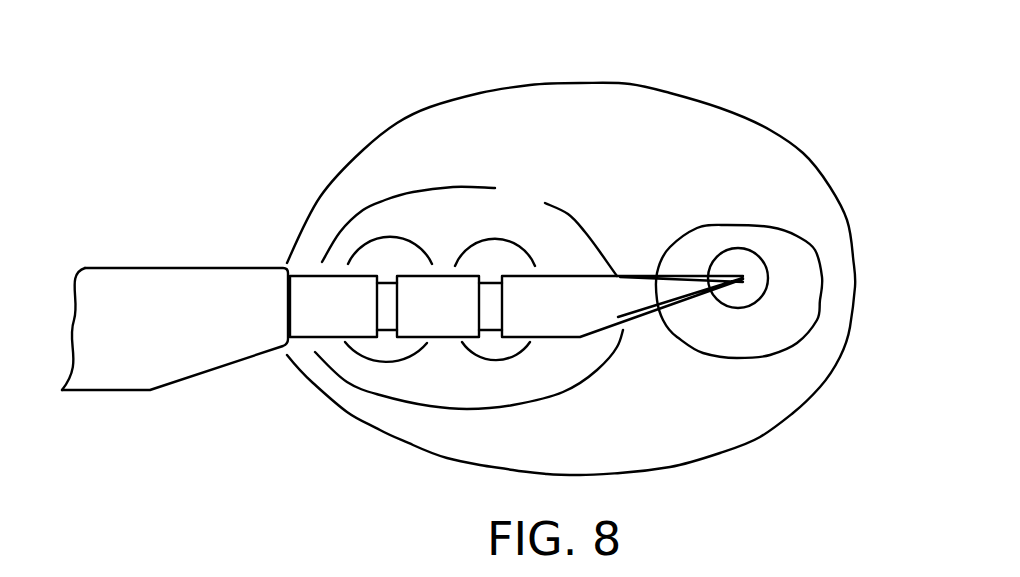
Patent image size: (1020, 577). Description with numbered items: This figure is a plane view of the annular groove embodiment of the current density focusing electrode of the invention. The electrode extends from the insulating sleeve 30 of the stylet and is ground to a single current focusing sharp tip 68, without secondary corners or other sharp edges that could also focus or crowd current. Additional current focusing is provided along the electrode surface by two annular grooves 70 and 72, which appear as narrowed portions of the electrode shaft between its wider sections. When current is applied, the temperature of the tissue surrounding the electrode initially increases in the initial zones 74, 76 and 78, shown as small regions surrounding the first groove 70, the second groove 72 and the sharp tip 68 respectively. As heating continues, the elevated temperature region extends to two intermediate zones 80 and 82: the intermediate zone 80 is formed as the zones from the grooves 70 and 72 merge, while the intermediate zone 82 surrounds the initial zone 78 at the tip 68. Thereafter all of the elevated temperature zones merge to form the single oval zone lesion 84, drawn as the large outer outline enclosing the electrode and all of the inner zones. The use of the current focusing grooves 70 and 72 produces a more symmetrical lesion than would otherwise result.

The insulating sleeve 30 is at (147, 266).
The sharp tip 68 is at (746, 275).
The annular groove 70 is at (388, 276).
The annular groove 72 is at (490, 287).
The initial zone 74 is at (358, 249).
The initial zone 76 is at (497, 250).
The initial zone 78 is at (760, 263).
The intermediate zone 80 is at (453, 187).
The intermediate zone 82 is at (797, 302).
The single oval zone lesion 84 is at (482, 95).